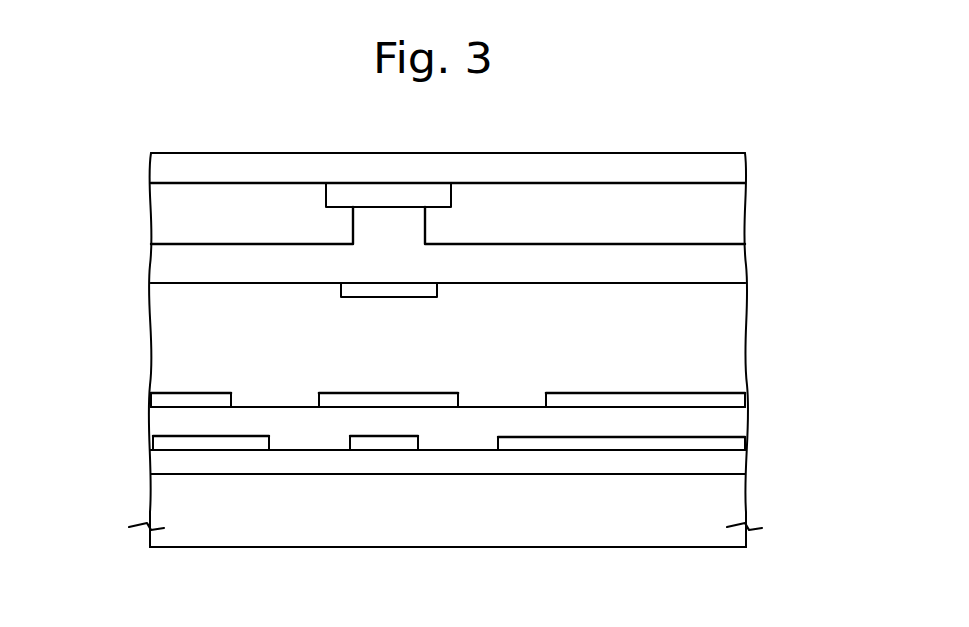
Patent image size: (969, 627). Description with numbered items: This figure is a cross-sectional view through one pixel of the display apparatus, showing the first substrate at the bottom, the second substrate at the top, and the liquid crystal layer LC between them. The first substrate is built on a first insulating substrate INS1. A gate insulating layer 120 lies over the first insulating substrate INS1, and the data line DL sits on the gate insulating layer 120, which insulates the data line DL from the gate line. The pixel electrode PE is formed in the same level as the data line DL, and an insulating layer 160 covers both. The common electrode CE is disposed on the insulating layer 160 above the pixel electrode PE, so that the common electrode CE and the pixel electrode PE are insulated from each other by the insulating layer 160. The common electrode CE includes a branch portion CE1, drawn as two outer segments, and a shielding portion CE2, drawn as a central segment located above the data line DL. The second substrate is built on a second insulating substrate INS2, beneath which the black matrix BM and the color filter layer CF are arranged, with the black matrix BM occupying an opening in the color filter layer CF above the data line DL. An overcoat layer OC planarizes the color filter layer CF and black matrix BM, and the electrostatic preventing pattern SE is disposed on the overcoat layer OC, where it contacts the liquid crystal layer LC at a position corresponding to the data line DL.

The second insulating substrate INS2 is at (731, 171).
The color filter layer CF is at (731, 219).
The black matrix BM is at (417, 190).
The overcoat layer OC is at (731, 267).
The electrostatic preventing pattern SE is at (385, 290).
The liquid crystal layer LC is at (731, 345).
The common electrode CE is at (80, 325).
The branch portion CE1 is at (592, 400).
The shielding portion CE2 is at (351, 400).
The insulating layer 160 is at (731, 427).
The pixel electrode PE is at (223, 443).
The data line DL is at (392, 443).
The gate insulating layer 120 is at (731, 467).
The first insulating substrate INS1 is at (731, 509).